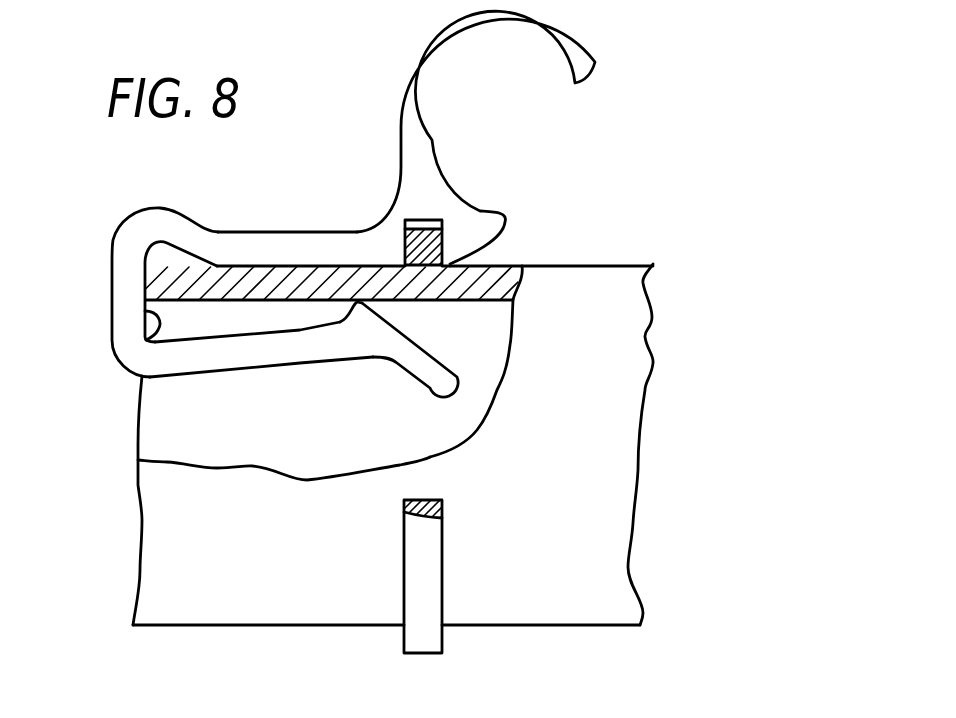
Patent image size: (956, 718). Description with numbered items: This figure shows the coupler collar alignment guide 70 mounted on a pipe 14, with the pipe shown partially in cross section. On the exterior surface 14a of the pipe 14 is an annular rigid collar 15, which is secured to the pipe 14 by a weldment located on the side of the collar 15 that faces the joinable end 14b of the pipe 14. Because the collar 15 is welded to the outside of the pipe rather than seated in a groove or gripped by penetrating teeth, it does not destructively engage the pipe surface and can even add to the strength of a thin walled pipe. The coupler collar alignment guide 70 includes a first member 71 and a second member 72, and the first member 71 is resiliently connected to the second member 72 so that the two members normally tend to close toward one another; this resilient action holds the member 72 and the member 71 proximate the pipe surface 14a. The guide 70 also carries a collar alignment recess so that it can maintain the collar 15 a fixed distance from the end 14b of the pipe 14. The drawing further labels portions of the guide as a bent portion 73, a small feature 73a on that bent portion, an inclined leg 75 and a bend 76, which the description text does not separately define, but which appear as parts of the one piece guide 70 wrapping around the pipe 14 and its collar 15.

The pipe 14 is at (602, 333).
The exterior surface 14a is at (583, 263).
The joinable end 14b is at (137, 569).
The annular rigid collar 15 is at (444, 235).
The coupler collar alignment guide 70 is at (372, 128).
The first member 71 is at (240, 350).
The second member 72 is at (294, 255).
The bent end portion 73 is at (122, 277).
The protrusion 73a is at (153, 333).
The inclined leg 75 is at (413, 340).
The bend 76 is at (353, 305).